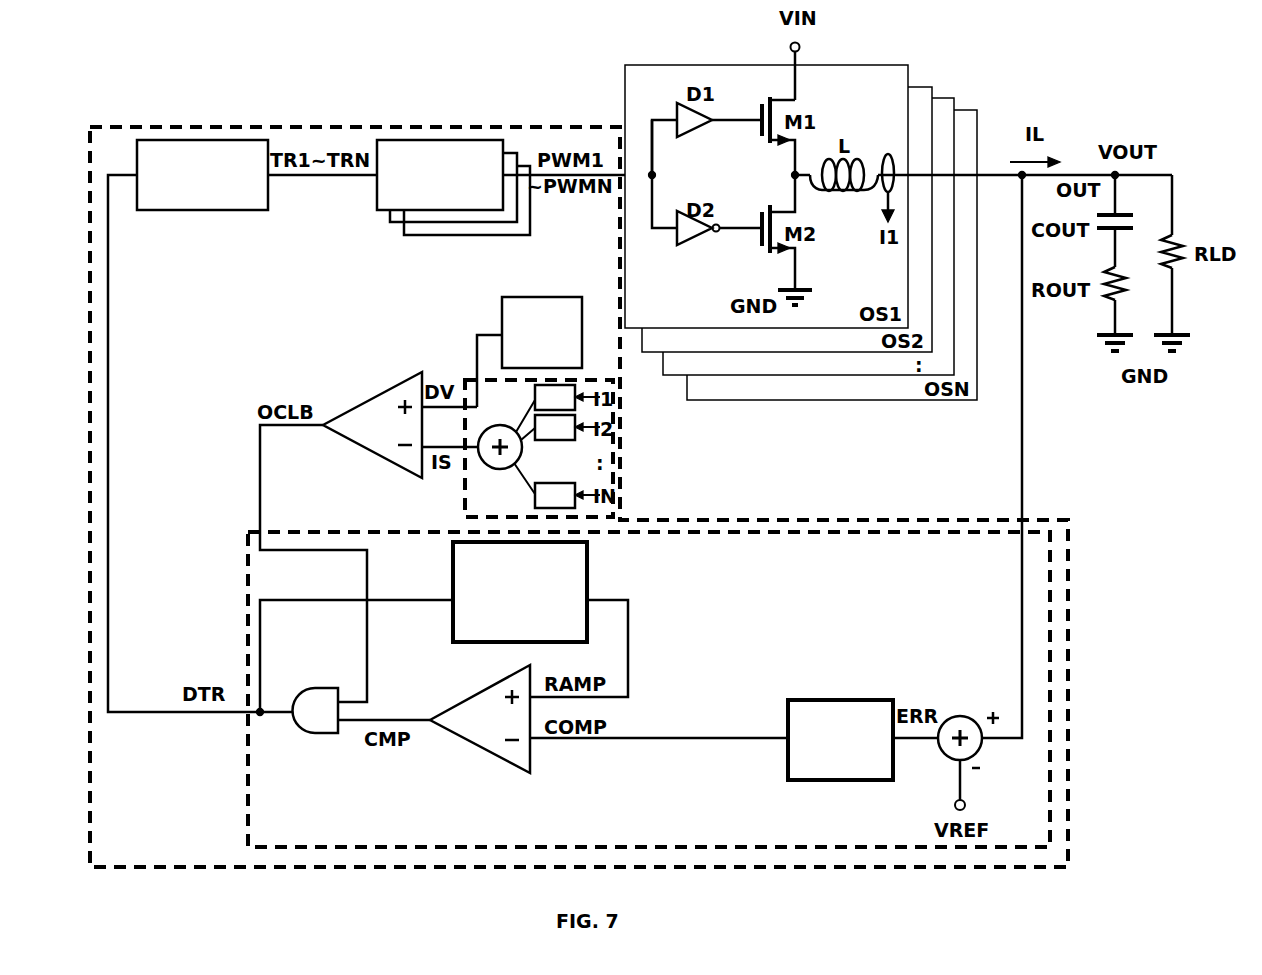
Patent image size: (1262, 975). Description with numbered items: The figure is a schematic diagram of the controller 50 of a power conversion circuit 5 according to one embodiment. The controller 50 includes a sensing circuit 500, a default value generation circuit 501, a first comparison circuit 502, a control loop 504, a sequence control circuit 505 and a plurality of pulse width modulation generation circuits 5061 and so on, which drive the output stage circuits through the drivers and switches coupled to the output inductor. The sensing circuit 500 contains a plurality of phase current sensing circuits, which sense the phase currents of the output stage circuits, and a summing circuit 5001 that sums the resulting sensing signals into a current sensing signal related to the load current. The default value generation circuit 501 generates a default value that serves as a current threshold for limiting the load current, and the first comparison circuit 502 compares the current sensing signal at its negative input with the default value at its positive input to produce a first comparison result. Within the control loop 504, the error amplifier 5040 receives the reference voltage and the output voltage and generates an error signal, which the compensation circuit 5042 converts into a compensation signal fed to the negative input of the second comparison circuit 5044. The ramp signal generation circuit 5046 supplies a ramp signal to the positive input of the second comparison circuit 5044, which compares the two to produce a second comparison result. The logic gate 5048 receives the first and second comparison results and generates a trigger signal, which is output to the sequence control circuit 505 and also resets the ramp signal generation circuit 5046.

The power conversion circuit 5 is at (145, 89).
The controller 50 is at (140, 850).
The sensing circuit 500 is at (508, 510).
The summing circuit 5001 is at (497, 434).
The default value generation circuit 501 is at (560, 346).
The first comparison circuit 502 is at (390, 438).
The control loop 504 is at (303, 835).
The error amplifier 5040 is at (971, 727).
The compensation circuit 5042 is at (867, 750).
The second comparison circuit 5044 is at (504, 732).
The ramp signal generation circuit 5046 is at (546, 605).
The logic gate 5048 is at (320, 722).
The sequence control circuit 505 is at (222, 191).
The pulse width modulation generation circuit 5061 is at (500, 188).